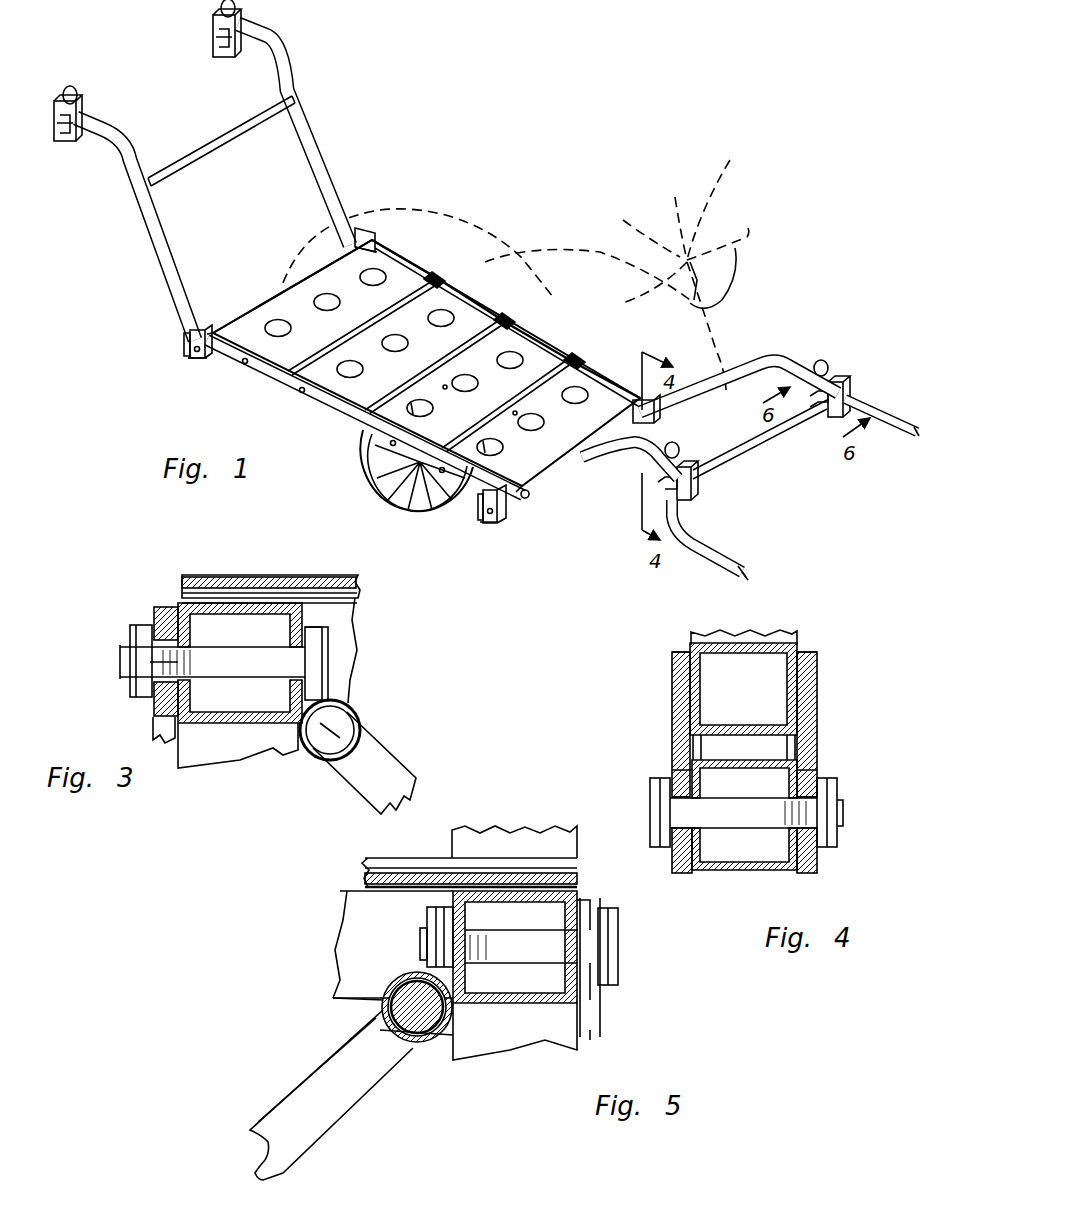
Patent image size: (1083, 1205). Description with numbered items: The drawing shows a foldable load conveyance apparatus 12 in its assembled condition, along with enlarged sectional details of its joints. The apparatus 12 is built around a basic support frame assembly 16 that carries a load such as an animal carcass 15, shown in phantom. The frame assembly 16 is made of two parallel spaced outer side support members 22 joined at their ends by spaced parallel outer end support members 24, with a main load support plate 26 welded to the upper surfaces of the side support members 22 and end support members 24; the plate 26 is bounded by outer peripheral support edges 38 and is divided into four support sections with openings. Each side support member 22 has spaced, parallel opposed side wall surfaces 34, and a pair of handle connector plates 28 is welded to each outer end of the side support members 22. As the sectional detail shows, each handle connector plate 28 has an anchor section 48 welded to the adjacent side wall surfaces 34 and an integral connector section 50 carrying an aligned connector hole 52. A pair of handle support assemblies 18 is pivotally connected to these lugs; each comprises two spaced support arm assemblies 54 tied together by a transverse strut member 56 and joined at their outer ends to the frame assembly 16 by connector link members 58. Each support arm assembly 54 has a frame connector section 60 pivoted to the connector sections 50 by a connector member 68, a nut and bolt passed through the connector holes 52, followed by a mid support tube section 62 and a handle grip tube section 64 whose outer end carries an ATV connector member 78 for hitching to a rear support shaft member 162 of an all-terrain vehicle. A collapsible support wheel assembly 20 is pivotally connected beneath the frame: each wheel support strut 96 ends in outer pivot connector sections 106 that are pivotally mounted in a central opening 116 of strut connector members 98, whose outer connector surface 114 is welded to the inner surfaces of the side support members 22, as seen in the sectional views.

In FIG. 1, the foldable load conveyance apparatus 12 is at (532, 213).
In FIG. 1, the animal carcass 15 is at (582, 250).
In FIG. 1, the basic support frame assembly 16 is at (442, 262).
In FIG. 1, the handle support assemblies 18 is at (306, 82).
In FIG. 1, the collapsible support wheel assembly 20 is at (410, 518).
In FIG. 1, the outer side support members 22 is at (440, 300).
In FIG. 3, the outer side support members 22 is at (210, 603).
In FIG. 4, the outer side support members 22 is at (795, 643).
In FIG. 5, the outer side support members 22 is at (560, 1000).
In FIG. 1, the outer end support members 24 is at (266, 298).
In FIG. 5, the outer end support members 24 is at (390, 913).
In FIG. 1, the main load support plate 26 is at (380, 248).
In FIG. 3, the main load support plate 26 is at (232, 575).
In FIG. 5, the main load support plate 26 is at (465, 857).
In FIG. 1, the handle connector plates 28 is at (188, 358).
In FIG. 4, the handle connector plates 28 is at (680, 670).
In FIG. 3, the side wall surfaces 34 is at (175, 607).
In FIG. 4, the side wall surfaces 34 is at (675, 755).
In FIG. 5, the side wall surfaces 34 is at (455, 895).
In FIG. 1, the outer peripheral support edges 38 is at (275, 350).
In FIG. 4, the anchor section 48 is at (672, 706).
In FIG. 4, the connector section 50 is at (678, 875).
In FIG. 4, the connector hole 52 is at (672, 795).
In FIG. 1, the support arm assemblies 54 is at (178, 258).
In FIG. 1, the transverse strut member 56 is at (295, 120).
In FIG. 1, the connector link members 58 is at (184, 350).
In FIG. 3, the connector link members 58 is at (160, 703).
In FIG. 5, the connector link members 58 is at (612, 900).
In FIG. 3, the frame connector section 60 is at (240, 760).
In FIG. 4, the frame connector section 60 is at (760, 868).
In FIG. 5, the frame connector section 60 is at (545, 1040).
In FIG. 4, the mid support tube section 62 is at (762, 630).
In FIG. 1, the handle grip tube section 64 is at (283, 55).
In FIG. 1, the connector member 68 is at (188, 333).
In FIG. 3, the connector member 68 is at (150, 632).
In FIG. 4, the connector member 68 is at (835, 795).
In FIG. 5, the connector member 68 is at (608, 960).
In FIG. 1, the ATV connector member 78 is at (212, 55).
In FIG. 3, the wheel support strut 96 is at (387, 767).
In FIG. 5, the wheel support strut 96 is at (385, 1070).
In FIG. 3, the strut connector members 98 is at (353, 710).
In FIG. 5, the strut connector members 98 is at (435, 1040).
In FIG. 3, the outer pivot connector sections 106 is at (320, 723).
In FIG. 5, the outer pivot connector sections 106 is at (403, 1025).
In FIG. 3, the outer connector surface 114 is at (327, 700).
In FIG. 5, the outer connector surface 114 is at (420, 958).
In FIG. 3, the central opening 116 is at (323, 750).
In FIG. 5, the central opening 116 is at (333, 997).
In FIG. 1, the rear support shaft member 162 is at (742, 570).